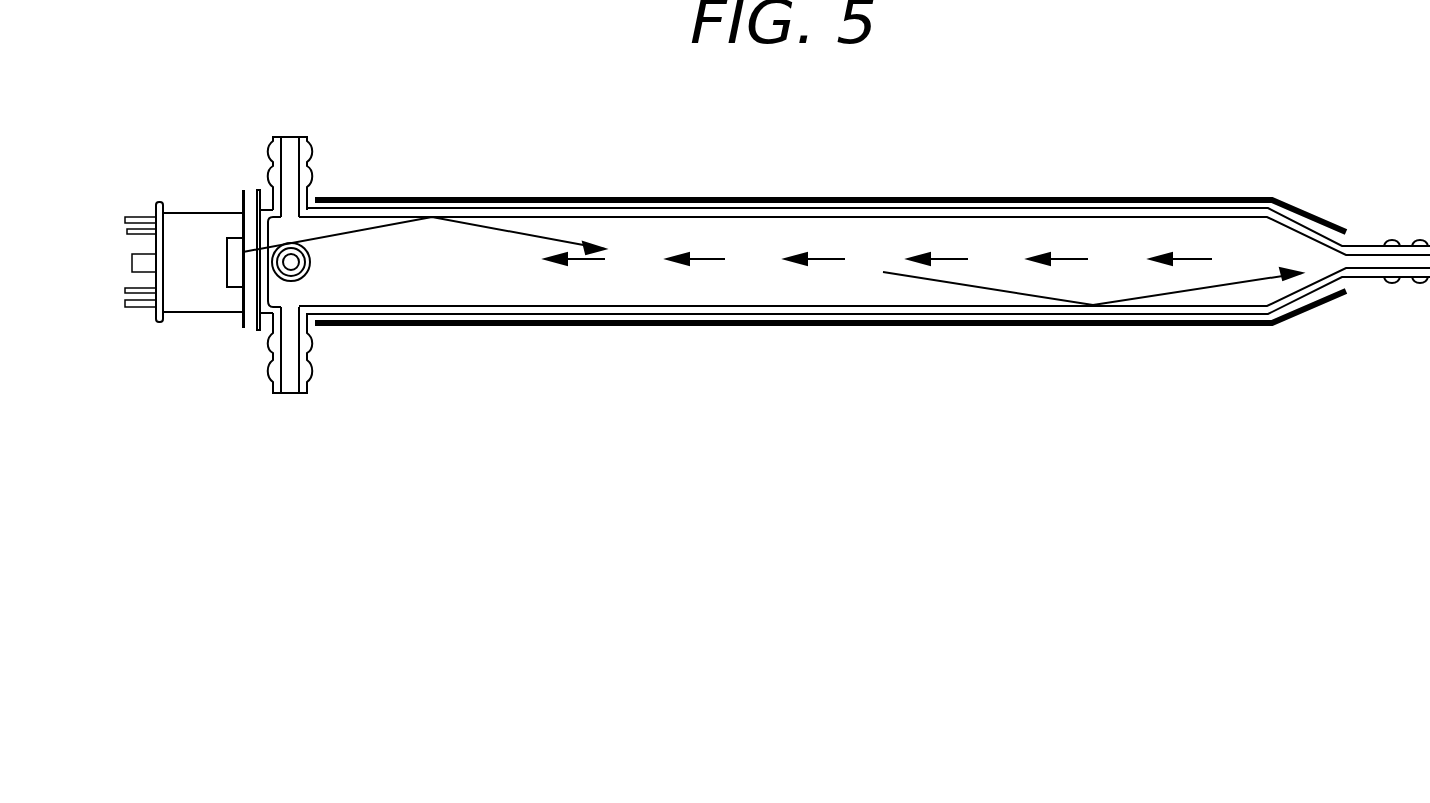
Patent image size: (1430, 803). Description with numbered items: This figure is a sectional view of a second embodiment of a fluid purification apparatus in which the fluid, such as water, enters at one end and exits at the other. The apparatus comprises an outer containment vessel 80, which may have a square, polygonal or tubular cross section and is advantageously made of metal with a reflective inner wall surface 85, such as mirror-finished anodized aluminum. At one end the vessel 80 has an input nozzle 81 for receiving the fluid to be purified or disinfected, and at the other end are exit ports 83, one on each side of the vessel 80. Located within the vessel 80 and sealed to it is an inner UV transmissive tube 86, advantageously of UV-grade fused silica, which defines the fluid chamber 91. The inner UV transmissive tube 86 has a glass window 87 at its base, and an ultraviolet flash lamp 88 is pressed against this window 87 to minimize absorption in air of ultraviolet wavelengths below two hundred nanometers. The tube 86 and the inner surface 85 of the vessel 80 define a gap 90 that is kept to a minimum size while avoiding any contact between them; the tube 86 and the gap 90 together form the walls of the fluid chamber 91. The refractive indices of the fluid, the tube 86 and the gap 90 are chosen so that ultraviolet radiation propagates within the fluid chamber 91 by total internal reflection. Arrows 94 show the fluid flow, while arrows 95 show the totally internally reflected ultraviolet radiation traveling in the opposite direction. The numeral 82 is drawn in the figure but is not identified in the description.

The outer containment vessel 80 is at (852, 197).
The input nozzle 81 is at (1345, 258).
The cross fitting 82 is at (243, 327).
The exit ports 83 is at (291, 143).
The reflective inner wall surface 85 is at (807, 207).
The inner UV transmissive tube 86 is at (1142, 208).
The glass window 87 is at (253, 243).
The ultraviolet flash lamp 88 is at (197, 290).
The gap 90 is at (1077, 207).
The fluid chamber 91 is at (730, 270).
The arrows showing fluid flow 94 is at (707, 258).
The arrows showing ultraviolet radiation 95 is at (525, 233).